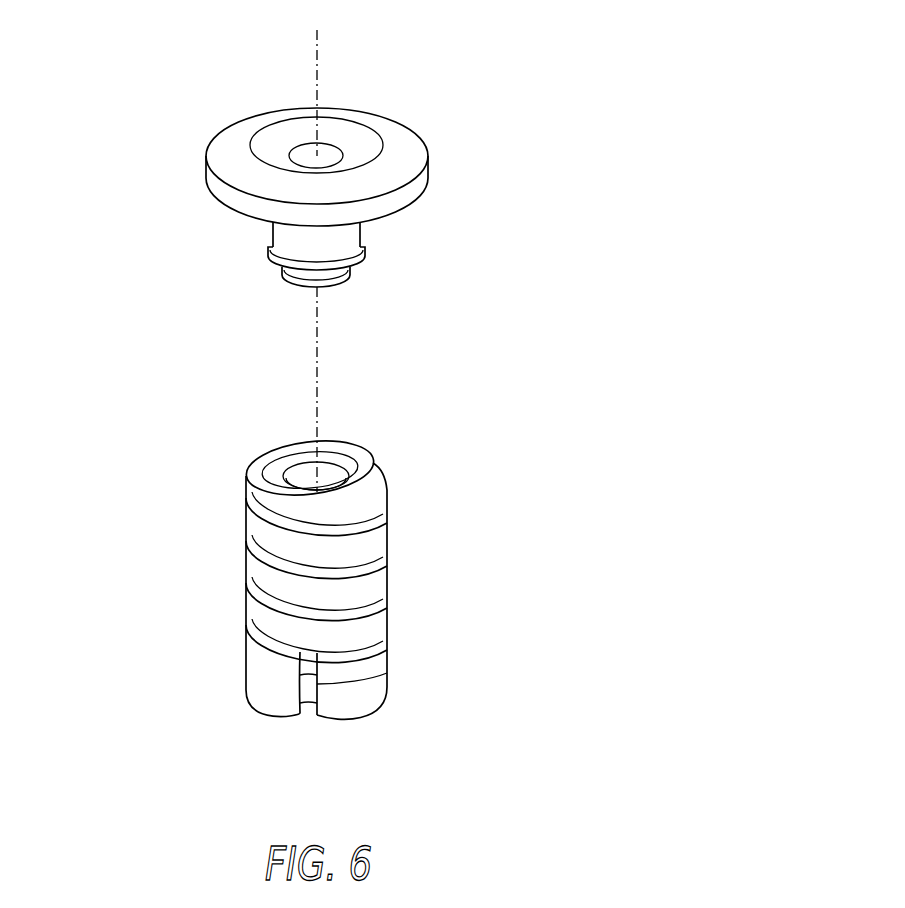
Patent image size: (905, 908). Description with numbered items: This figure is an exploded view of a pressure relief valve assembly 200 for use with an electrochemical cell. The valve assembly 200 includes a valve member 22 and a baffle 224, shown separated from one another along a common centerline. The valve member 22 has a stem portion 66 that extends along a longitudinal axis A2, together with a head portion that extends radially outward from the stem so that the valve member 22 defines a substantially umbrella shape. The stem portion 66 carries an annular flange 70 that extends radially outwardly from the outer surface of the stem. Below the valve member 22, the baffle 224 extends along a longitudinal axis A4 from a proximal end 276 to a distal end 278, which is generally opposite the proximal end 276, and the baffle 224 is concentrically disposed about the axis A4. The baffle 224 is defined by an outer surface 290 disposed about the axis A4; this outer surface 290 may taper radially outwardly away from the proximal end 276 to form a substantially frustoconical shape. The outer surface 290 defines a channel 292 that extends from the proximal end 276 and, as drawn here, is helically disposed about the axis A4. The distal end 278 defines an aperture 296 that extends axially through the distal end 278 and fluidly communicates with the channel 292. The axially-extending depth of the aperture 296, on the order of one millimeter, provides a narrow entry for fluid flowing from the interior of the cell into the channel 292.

The valve assembly 200 is at (570, 40).
The valve member 22 is at (190, 153).
The stem portion 66 is at (272, 240).
The annular flange 70 is at (366, 256).
The longitudinal axis A2 is at (316, 54).
The longitudinal axis A4 is at (317, 79).
The baffle 224 is at (193, 474).
The proximal end 276 is at (362, 456).
The outer surface 290 is at (325, 566).
The channel 292 is at (242, 592).
The distal end 278 is at (350, 716).
The aperture 296 is at (300, 700).